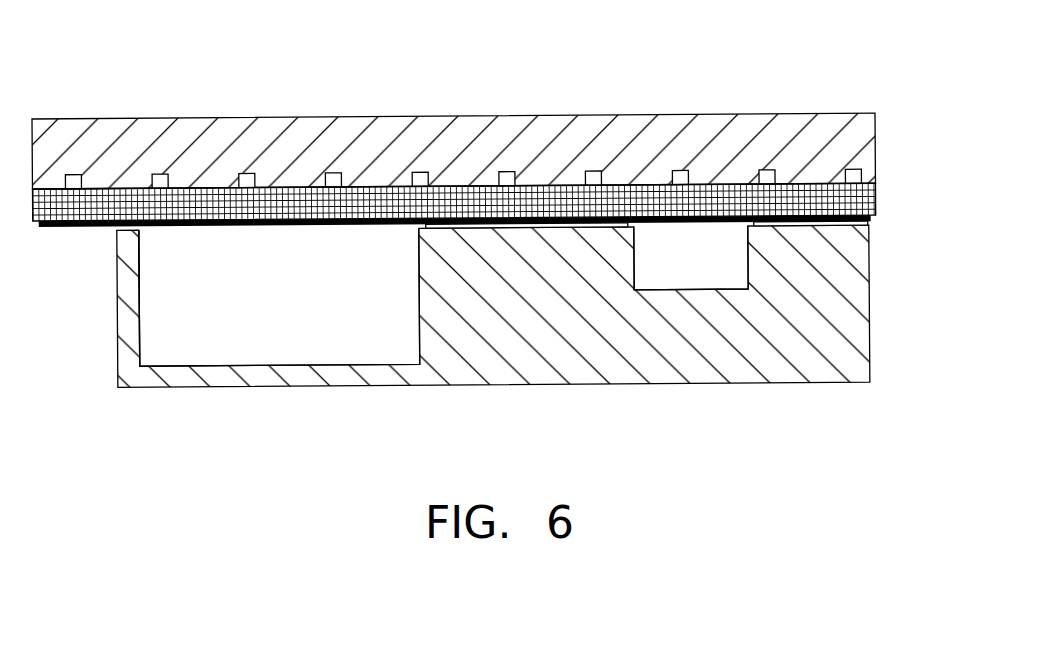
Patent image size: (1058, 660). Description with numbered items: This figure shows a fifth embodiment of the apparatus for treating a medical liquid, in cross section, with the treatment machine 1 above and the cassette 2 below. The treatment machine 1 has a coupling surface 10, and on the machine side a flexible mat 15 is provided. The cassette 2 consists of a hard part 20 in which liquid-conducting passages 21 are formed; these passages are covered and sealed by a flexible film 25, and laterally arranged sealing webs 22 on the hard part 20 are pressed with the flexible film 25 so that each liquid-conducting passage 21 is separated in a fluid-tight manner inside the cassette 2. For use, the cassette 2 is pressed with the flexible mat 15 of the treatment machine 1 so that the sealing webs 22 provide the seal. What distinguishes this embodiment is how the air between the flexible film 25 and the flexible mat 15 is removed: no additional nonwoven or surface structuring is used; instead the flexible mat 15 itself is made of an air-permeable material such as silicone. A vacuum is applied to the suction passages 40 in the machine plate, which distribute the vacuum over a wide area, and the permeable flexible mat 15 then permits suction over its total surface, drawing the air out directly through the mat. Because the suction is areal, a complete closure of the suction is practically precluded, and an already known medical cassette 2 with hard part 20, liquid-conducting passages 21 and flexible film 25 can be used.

The treatment machine 1 is at (116, 109).
The cassette 2 is at (132, 407).
The coupling surface 10 is at (876, 161).
The flexible mat 15 is at (865, 198).
The hard part 20 is at (768, 372).
The liquid-conducting passage 21 is at (292, 344).
The sealing web 22 is at (139, 231).
The flexible film 25 is at (345, 227).
The suction passage 40 is at (505, 174).